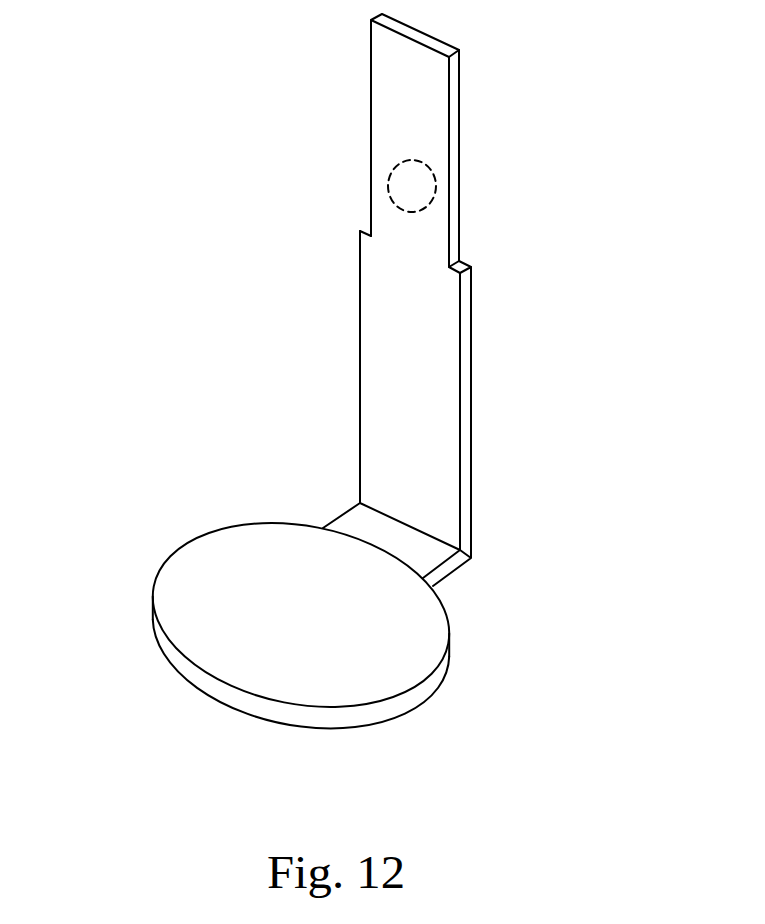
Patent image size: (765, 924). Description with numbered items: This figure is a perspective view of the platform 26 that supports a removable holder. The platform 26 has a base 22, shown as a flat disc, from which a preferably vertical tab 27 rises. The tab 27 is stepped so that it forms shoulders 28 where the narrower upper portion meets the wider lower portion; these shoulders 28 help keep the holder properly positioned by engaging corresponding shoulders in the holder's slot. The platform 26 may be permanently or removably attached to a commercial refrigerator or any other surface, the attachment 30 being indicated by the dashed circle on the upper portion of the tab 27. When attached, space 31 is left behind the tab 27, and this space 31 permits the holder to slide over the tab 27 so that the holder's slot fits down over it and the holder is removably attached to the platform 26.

The base 22 is at (202, 577).
The platform 26 is at (428, 487).
The vertical tab 27 is at (397, 132).
The shoulders 28 is at (370, 233).
The attachment 30 is at (418, 186).
The space 31 is at (463, 168).